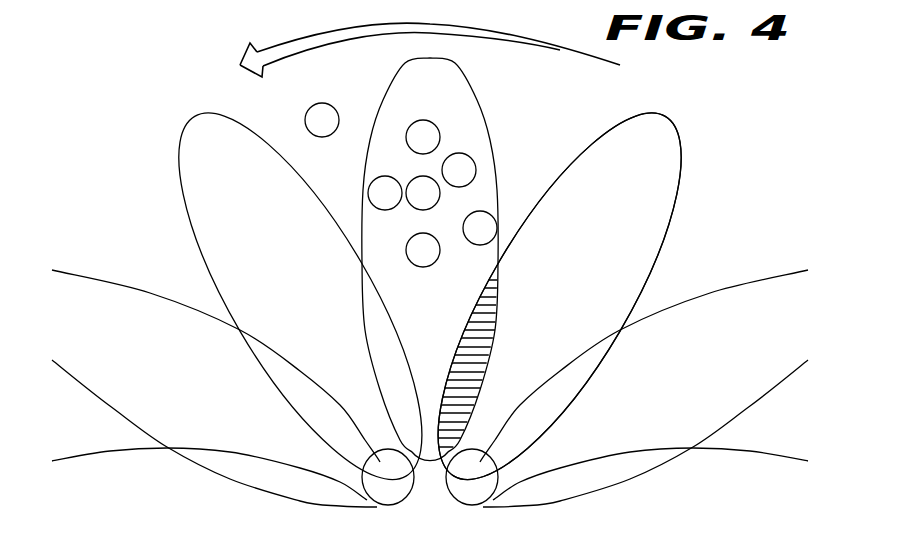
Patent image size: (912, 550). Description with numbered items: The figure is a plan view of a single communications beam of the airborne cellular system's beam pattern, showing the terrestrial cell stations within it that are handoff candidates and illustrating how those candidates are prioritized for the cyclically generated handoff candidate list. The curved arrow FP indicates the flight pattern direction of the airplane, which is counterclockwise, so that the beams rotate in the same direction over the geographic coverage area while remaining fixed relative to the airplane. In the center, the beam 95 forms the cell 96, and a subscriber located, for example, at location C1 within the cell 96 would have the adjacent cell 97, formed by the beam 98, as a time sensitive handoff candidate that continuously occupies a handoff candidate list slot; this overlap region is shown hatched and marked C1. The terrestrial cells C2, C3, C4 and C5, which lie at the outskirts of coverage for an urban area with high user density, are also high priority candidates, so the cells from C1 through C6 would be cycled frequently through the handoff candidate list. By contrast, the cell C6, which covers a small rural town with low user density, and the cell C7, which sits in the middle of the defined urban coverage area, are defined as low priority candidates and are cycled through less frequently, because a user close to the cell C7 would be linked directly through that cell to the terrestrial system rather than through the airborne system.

The beam 95 is at (479, 108).
The cell 96 is at (446, 302).
The cell 97 is at (574, 302).
The beam 98 is at (571, 170).
The flight pattern direction arrow FP is at (430, 46).
The location C1 is at (467, 329).
The terrestrial cell C2 is at (459, 170).
The terrestrial cell C3 is at (423, 250).
The terrestrial cell C4 is at (423, 137).
The terrestrial cell C5 is at (385, 193).
The cell C6 is at (322, 120).
The cell C7 is at (423, 193).